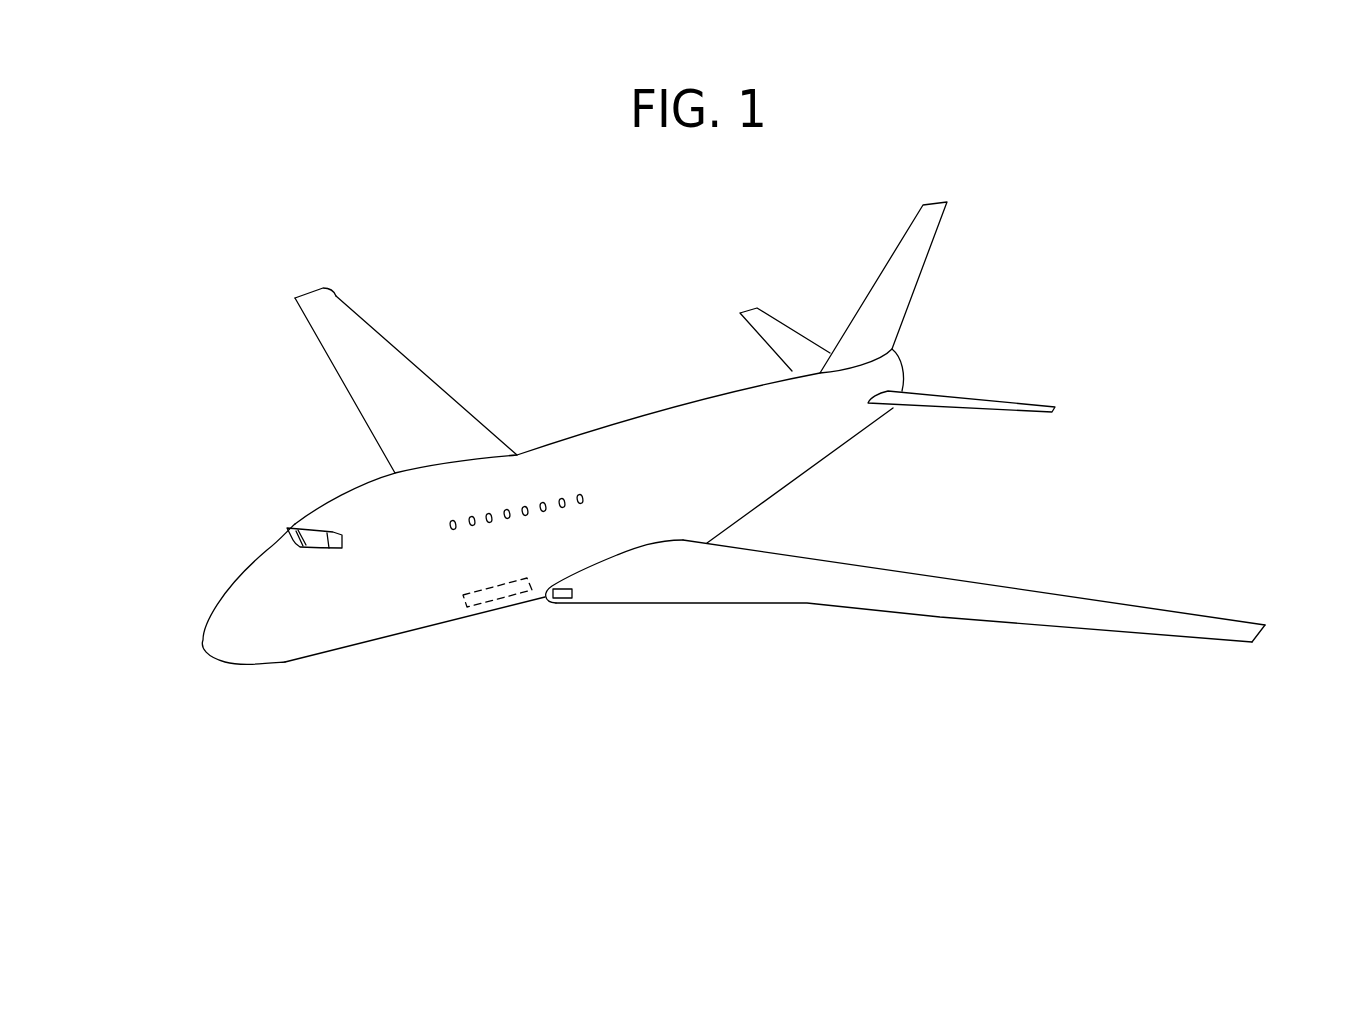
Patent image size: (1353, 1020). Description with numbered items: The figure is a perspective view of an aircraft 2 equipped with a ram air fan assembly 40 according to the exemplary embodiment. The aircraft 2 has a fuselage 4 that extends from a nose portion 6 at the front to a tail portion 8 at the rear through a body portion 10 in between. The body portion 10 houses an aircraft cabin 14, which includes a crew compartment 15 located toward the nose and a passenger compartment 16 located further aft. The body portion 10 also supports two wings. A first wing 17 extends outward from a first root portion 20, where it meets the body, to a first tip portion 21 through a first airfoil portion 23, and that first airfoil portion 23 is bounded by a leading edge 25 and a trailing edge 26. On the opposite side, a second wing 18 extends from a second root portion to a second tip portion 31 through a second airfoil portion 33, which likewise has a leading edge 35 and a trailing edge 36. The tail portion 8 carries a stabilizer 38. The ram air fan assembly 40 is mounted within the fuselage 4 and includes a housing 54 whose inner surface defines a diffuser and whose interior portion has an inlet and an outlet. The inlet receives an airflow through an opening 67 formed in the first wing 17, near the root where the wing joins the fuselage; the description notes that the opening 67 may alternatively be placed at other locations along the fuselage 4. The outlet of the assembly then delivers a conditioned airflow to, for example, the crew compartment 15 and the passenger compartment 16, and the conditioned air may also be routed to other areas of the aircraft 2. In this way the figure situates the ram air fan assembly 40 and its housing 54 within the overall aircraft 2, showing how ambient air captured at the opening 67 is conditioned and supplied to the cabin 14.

The aircraft 2 is at (185, 441).
The fuselage 4 is at (336, 643).
The nose portion 6 is at (205, 642).
The tail portion 8 is at (870, 414).
The body portion 10 is at (740, 505).
The aircraft cabin 14 is at (600, 505).
The crew compartment 15 is at (292, 530).
The passenger compartment 16 is at (642, 485).
The first wing 17 is at (976, 638).
The second wing 18 is at (339, 295).
The first root portion 20 is at (618, 555).
The first tip portion 21 is at (1262, 633).
The first airfoil portion 23 is at (880, 582).
The leading edge 25 is at (813, 600).
The trailing edge 26 is at (1022, 585).
The second tip portion 31 is at (312, 288).
The second airfoil portion 33 is at (353, 327).
The leading edge 35 is at (347, 382).
The trailing edge 36 is at (380, 330).
The stabilizer 38 is at (955, 366).
The ram air fan (RAF) assembly 40 is at (518, 635).
The housing 54 is at (475, 628).
The opening 67 is at (557, 588).